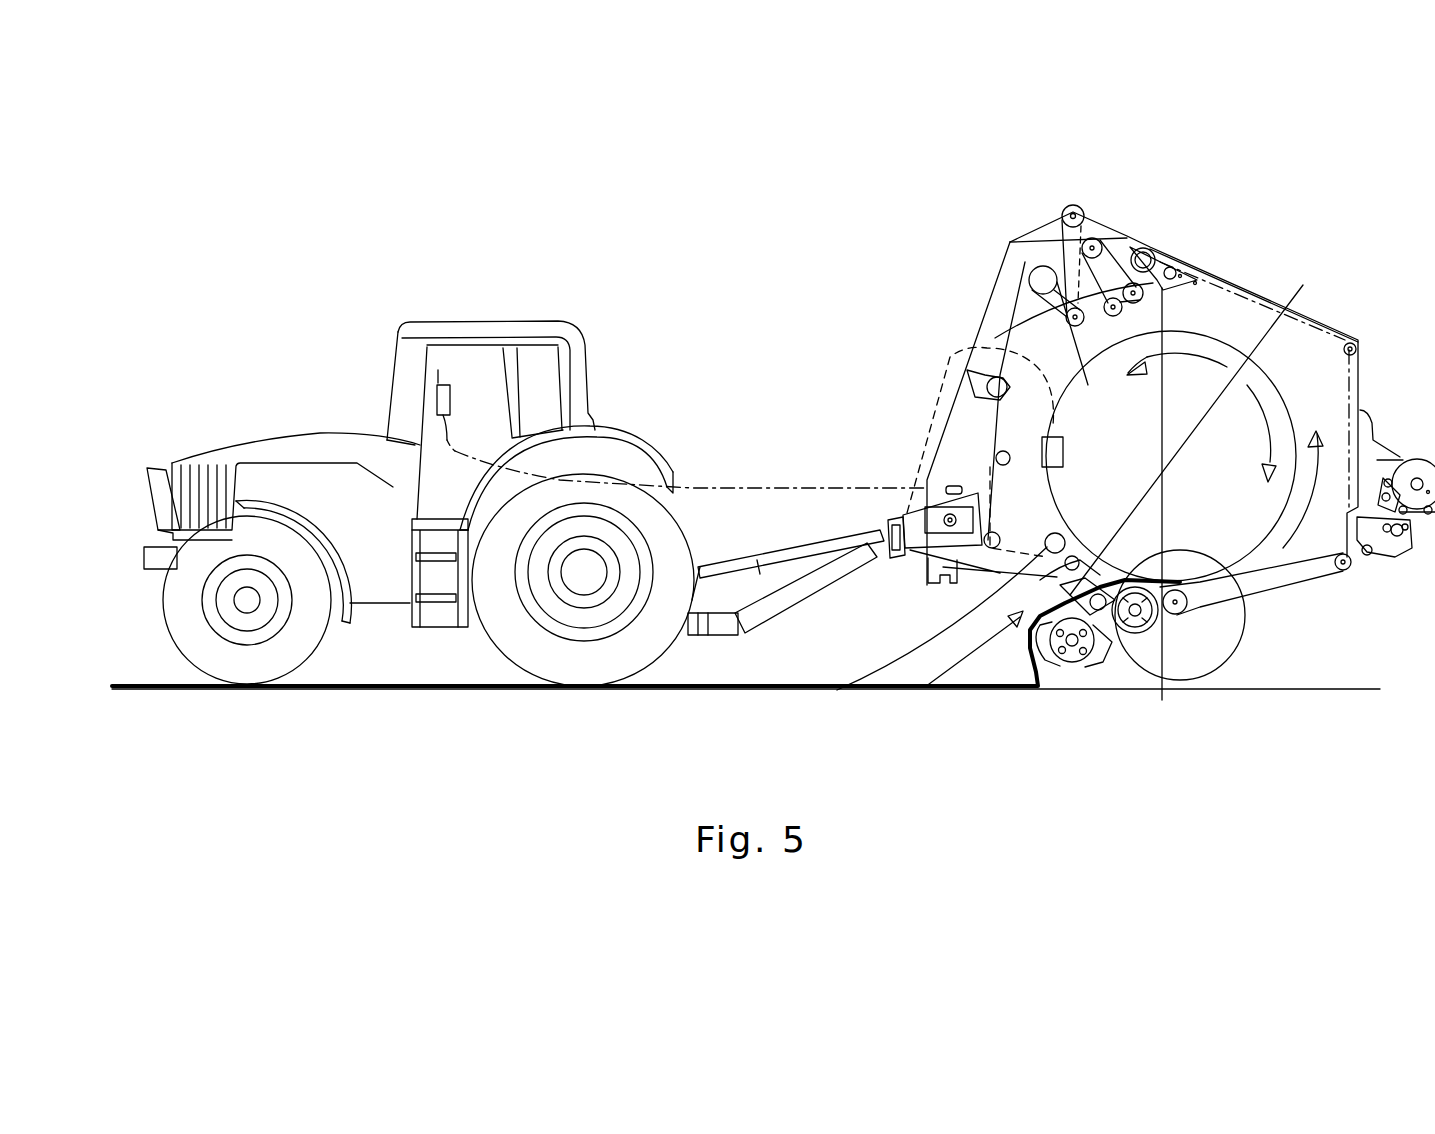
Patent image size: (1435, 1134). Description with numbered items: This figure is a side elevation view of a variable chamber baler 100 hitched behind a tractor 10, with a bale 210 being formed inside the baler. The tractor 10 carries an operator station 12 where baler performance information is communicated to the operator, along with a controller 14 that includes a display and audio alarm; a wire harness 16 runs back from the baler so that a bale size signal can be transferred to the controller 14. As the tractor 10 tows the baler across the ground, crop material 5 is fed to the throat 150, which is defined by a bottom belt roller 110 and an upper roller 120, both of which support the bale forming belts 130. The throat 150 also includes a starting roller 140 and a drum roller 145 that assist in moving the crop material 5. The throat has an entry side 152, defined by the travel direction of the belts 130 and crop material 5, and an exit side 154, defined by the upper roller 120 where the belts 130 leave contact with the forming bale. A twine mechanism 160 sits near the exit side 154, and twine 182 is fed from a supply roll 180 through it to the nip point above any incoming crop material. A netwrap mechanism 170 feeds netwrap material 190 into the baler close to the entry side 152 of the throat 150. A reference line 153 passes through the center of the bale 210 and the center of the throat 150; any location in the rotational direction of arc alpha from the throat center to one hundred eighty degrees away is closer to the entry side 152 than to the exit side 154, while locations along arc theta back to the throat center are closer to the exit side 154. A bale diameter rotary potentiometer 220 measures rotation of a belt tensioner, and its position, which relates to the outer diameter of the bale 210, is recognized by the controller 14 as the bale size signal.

The crop material 5 is at (1000, 688).
The tractor 10 is at (596, 311).
The operator station 12 is at (487, 410).
The controller 14 is at (438, 383).
The wire harness 16 is at (757, 487).
The variable chamber baler 100 is at (908, 318).
The bottom belt roller 110 is at (1163, 700).
The upper roller 120 is at (1047, 560).
The bale forming belts 130 is at (1045, 455).
The starting roller 140 is at (985, 611).
The drum roller 145 is at (1142, 645).
The throat 150 is at (925, 687).
The entry side 152 is at (1155, 643).
The line 153 is at (1298, 280).
The exit side 154 is at (837, 690).
The twine mechanism 160 is at (927, 497).
The netwrap mechanism 170 is at (1383, 560).
The supply roll 180 is at (1055, 457).
The twine 182 is at (925, 440).
The netwrap material 190 is at (1434, 598).
The bale 210 is at (1088, 385).
The bale diameter rotary potentiometer 220 is at (965, 383).